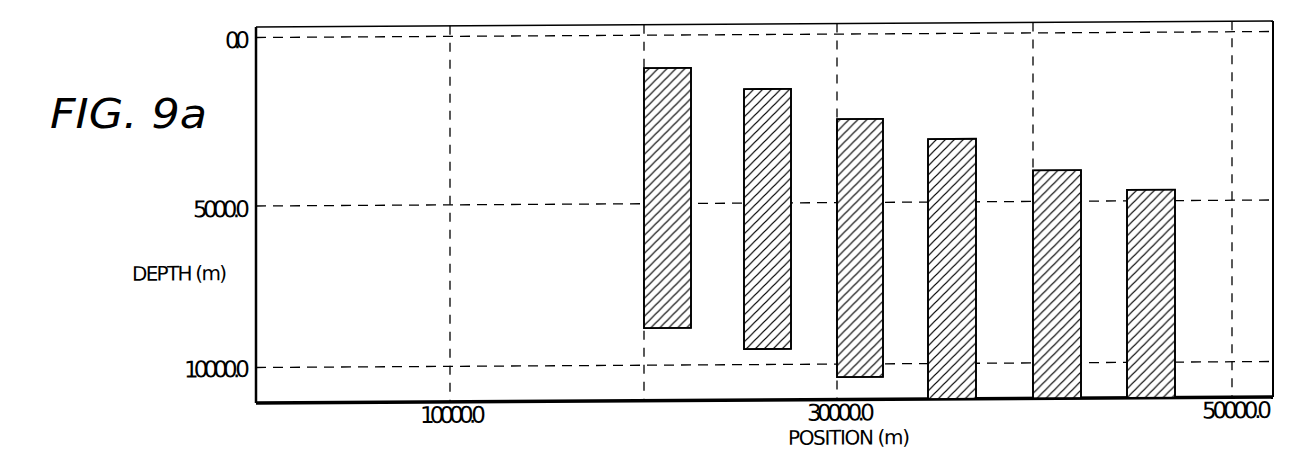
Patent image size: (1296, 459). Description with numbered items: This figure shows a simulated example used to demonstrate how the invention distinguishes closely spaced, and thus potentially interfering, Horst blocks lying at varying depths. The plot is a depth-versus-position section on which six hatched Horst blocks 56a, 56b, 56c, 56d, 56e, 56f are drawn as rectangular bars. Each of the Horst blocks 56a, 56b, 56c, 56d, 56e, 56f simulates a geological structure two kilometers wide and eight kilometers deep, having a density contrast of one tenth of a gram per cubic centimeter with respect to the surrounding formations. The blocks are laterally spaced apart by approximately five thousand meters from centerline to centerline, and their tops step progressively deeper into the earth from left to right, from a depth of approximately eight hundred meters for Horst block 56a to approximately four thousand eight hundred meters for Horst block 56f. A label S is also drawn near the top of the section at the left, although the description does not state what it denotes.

The source position S is at (397, 41).
The Horst block 56a is at (641, 95).
The Horst block 56b is at (769, 92).
The Horst block 56c is at (859, 123).
The Horst block 56d is at (952, 143).
The Horst block 56e is at (1063, 175).
The Horst block 56f is at (1158, 195).